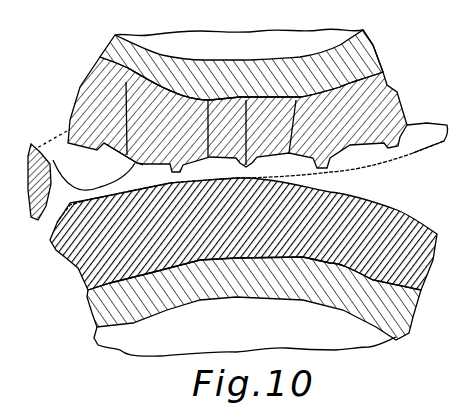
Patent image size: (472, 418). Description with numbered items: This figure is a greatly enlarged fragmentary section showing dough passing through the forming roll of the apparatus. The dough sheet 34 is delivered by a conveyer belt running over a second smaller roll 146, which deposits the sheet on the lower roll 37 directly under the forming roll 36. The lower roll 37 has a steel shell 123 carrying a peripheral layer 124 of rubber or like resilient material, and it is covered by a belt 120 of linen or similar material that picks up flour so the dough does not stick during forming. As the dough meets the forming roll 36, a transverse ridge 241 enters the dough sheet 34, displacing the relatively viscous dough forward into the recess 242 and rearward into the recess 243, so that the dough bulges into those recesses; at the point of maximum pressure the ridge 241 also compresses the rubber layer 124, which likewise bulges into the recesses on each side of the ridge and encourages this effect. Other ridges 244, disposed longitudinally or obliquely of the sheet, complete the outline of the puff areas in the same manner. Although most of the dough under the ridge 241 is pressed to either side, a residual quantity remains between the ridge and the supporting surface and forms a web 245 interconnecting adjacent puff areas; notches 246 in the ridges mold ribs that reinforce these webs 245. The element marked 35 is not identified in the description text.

The forming roll 36 is at (245, 100).
The notches in the ridges 246 is at (126, 82).
The recess 242 is at (208, 100).
The transverse ridge 241 is at (246, 100).
The recess 243 is at (296, 100).
The web 245 is at (417, 144).
The longitudinal or oblique ridges 244 is at (138, 167).
The dough sheet 34 is at (110, 181).
The second smaller roll 146 is at (64, 122).
The lip portion 35 is at (43, 218).
The belt 120 is at (239, 268).
The peripheral layer of rubber 124 is at (92, 312).
The steel shell 123 is at (95, 340).
The lower roll 37 is at (132, 362).